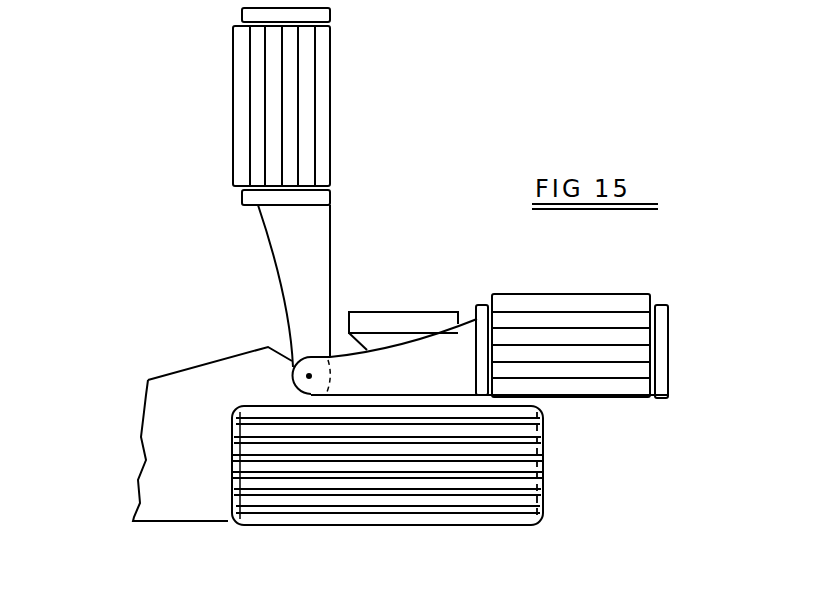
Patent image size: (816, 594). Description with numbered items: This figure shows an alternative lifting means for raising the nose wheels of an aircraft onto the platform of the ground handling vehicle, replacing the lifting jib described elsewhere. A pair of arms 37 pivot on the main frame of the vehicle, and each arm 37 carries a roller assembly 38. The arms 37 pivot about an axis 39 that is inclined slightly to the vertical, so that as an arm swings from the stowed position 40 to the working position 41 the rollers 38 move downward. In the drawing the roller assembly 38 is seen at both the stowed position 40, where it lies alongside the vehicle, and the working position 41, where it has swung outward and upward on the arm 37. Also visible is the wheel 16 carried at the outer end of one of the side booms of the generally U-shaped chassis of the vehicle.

The wheel 16 is at (545, 470).
The arm 37 is at (323, 237).
The roller assembly 38 is at (325, 93).
The axis 39 is at (306, 376).
The stowed position 40 is at (604, 346).
The working position 41 is at (176, 56).